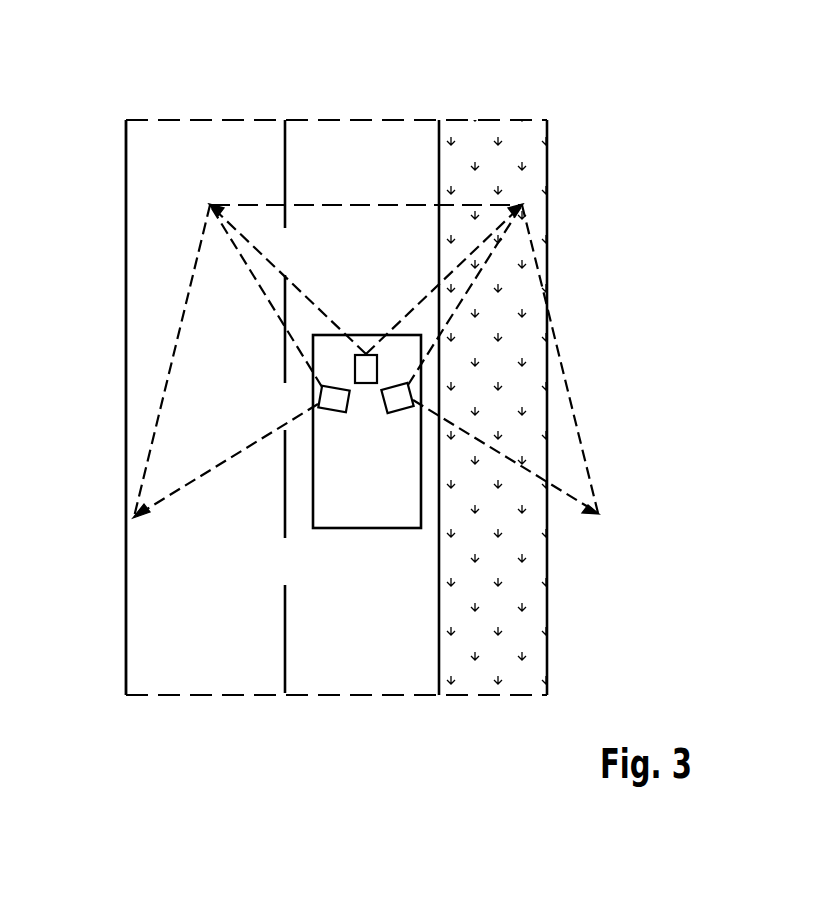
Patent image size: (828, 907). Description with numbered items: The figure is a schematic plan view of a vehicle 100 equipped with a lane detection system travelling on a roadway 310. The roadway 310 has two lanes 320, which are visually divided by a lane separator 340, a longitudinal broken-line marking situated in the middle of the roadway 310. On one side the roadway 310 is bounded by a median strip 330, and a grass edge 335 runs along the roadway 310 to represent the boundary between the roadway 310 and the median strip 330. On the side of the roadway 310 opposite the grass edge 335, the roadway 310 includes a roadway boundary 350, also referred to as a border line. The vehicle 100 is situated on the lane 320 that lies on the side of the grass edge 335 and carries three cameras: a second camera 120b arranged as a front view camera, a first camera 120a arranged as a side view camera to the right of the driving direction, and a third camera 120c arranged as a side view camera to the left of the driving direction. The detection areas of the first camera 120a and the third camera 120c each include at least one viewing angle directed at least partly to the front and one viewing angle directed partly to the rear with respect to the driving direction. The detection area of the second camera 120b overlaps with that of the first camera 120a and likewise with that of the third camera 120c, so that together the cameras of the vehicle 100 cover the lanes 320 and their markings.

The roadway 310 is at (158, 103).
The roadway boundary 350 is at (126, 208).
The lane separator 340 is at (287, 150).
The grass edge 335 is at (442, 672).
The median strip 330 is at (508, 653).
The lanes 320 is at (208, 707).
The vehicle 100 is at (367, 530).
The first camera 120a is at (392, 387).
The second camera 120b is at (366, 383).
The third camera 120c is at (320, 400).